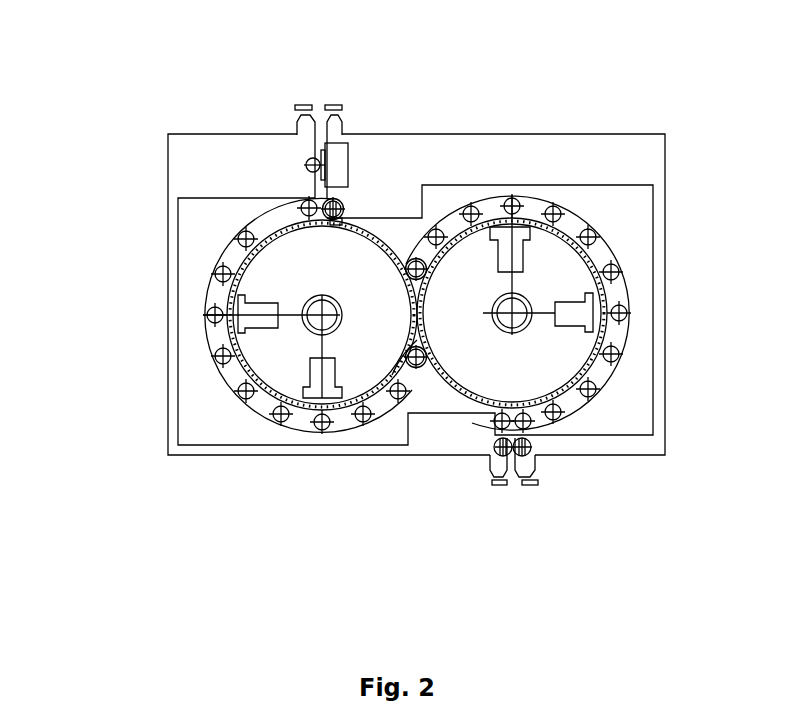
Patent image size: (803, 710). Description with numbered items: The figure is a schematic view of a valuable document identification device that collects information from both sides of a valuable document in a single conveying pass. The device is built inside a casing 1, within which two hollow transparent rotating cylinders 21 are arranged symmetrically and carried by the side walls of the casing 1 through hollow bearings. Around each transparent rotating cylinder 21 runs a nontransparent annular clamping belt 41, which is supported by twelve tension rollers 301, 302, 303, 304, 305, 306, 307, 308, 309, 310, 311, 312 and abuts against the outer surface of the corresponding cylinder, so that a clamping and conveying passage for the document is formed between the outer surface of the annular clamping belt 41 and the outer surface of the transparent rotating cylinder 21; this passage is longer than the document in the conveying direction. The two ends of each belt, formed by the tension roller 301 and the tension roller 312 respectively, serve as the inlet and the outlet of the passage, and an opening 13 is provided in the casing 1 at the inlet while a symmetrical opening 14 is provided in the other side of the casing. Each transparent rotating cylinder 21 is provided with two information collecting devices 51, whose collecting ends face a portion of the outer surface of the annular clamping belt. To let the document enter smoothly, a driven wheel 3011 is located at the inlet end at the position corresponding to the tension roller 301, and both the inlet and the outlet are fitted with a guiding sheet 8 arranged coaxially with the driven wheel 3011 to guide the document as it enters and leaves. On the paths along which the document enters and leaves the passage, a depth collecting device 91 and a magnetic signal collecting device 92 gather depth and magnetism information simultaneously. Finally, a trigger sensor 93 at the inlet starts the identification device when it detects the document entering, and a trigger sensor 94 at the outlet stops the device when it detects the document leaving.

The casing 1 is at (643, 157).
The opening 13 is at (322, 123).
The trigger sensor 93 is at (333, 105).
The magnetic signal collecting device 92 is at (333, 165).
The driven wheel 3011 is at (343, 208).
The guiding sheet 8 is at (421, 262).
The tension roller 301 is at (307, 200).
The tension roller 302 is at (255, 222).
The tension roller 303 is at (240, 236).
The tension roller 304 is at (222, 275).
The annular clamping belt 41 is at (206, 298).
The tension roller 305 is at (205, 316).
The tension roller 306 is at (225, 357).
The tension roller 307 is at (243, 395).
The tension roller 308 is at (280, 411).
The tension roller 309 is at (321, 430).
The tension roller 310 is at (363, 421).
The tension roller 311 is at (401, 400).
The tension roller 312 is at (420, 376).
The information collecting device 51 is at (560, 314).
The transparent rotating cylinder 21 is at (590, 368).
The depth collecting device 91 is at (531, 447).
The opening 14 is at (515, 474).
The trigger sensor 94 is at (502, 486).